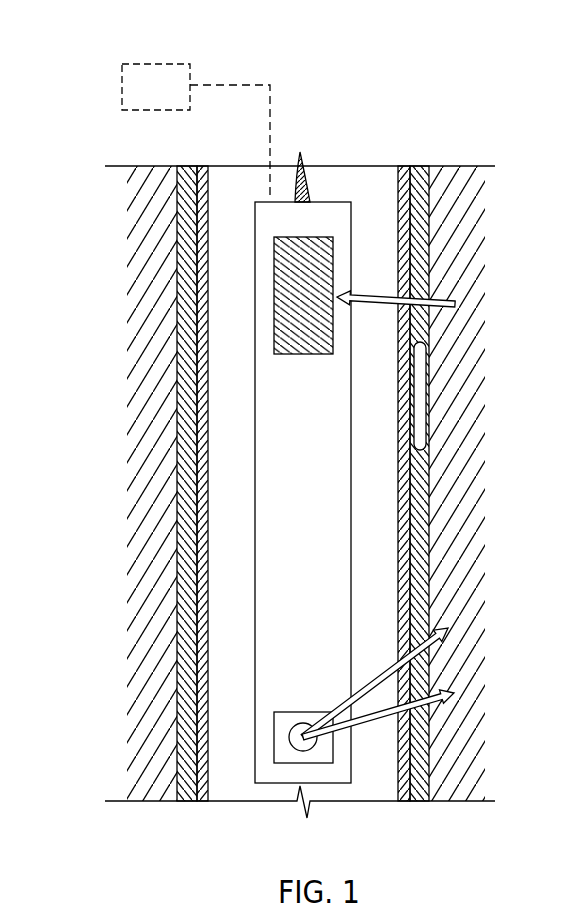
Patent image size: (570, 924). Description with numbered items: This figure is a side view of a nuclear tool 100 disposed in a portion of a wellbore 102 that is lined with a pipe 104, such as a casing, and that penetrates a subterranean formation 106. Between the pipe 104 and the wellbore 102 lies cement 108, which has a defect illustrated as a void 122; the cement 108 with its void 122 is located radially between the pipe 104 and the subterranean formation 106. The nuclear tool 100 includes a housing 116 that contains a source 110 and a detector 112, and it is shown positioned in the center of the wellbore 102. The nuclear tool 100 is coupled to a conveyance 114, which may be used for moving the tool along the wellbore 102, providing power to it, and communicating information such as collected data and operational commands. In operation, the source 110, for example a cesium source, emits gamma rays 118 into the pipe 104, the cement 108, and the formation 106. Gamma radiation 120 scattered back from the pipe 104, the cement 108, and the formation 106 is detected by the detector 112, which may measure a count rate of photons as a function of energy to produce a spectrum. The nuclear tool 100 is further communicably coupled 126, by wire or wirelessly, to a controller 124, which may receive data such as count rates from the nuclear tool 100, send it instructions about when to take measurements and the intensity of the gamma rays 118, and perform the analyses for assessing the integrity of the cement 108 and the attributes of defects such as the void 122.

The nuclear tool 100 is at (210, 437).
The wellbore 102 is at (432, 190).
The pipe 104 is at (405, 188).
The subterranean formation 106 is at (145, 487).
The cement 108 is at (425, 235).
The source 110 is at (300, 712).
The detector 112 is at (297, 357).
The conveyance 114 is at (297, 195).
The housing 116 is at (255, 578).
The gamma rays 118 is at (456, 697).
The gamma radiation 120 is at (458, 306).
The void 122 is at (428, 398).
The controller 124 is at (143, 97).
The communicable coupling 126 is at (264, 85).